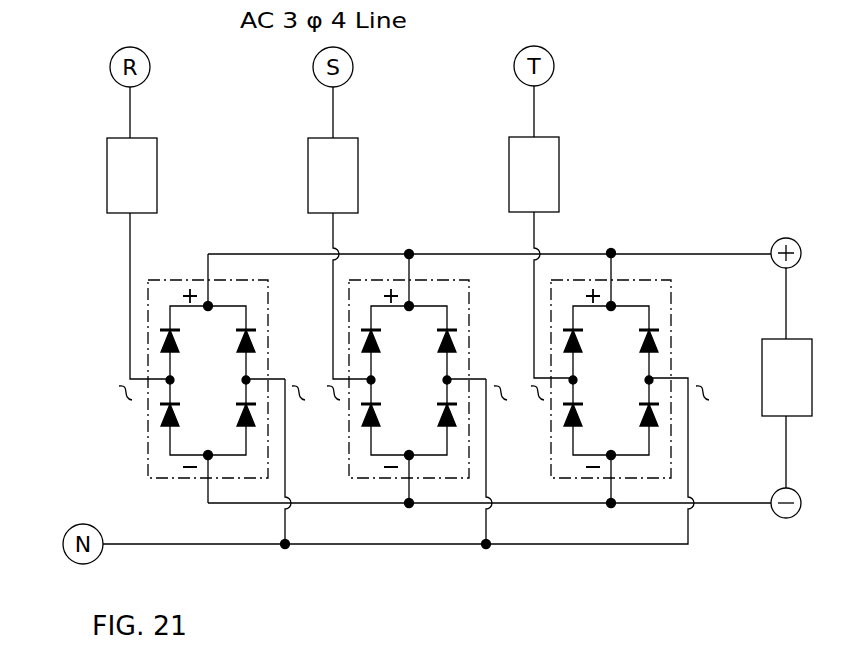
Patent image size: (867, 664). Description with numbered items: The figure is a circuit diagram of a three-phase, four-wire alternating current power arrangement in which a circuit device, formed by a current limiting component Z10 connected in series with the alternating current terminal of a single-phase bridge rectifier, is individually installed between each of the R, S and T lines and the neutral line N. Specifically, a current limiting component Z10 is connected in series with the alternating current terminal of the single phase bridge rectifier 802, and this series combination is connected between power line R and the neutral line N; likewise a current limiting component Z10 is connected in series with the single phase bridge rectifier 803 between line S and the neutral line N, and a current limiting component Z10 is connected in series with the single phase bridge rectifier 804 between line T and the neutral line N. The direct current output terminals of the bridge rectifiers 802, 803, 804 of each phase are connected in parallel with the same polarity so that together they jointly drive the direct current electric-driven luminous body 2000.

The single phase bridge rectifier 802 is at (160, 280).
The single phase bridge rectifier 803 is at (409, 355).
The single phase bridge rectifier 804 is at (611, 354).
The direct current electric-driven luminous body 2000 is at (760, 377).
The current limiting component Z10 is at (105, 188).